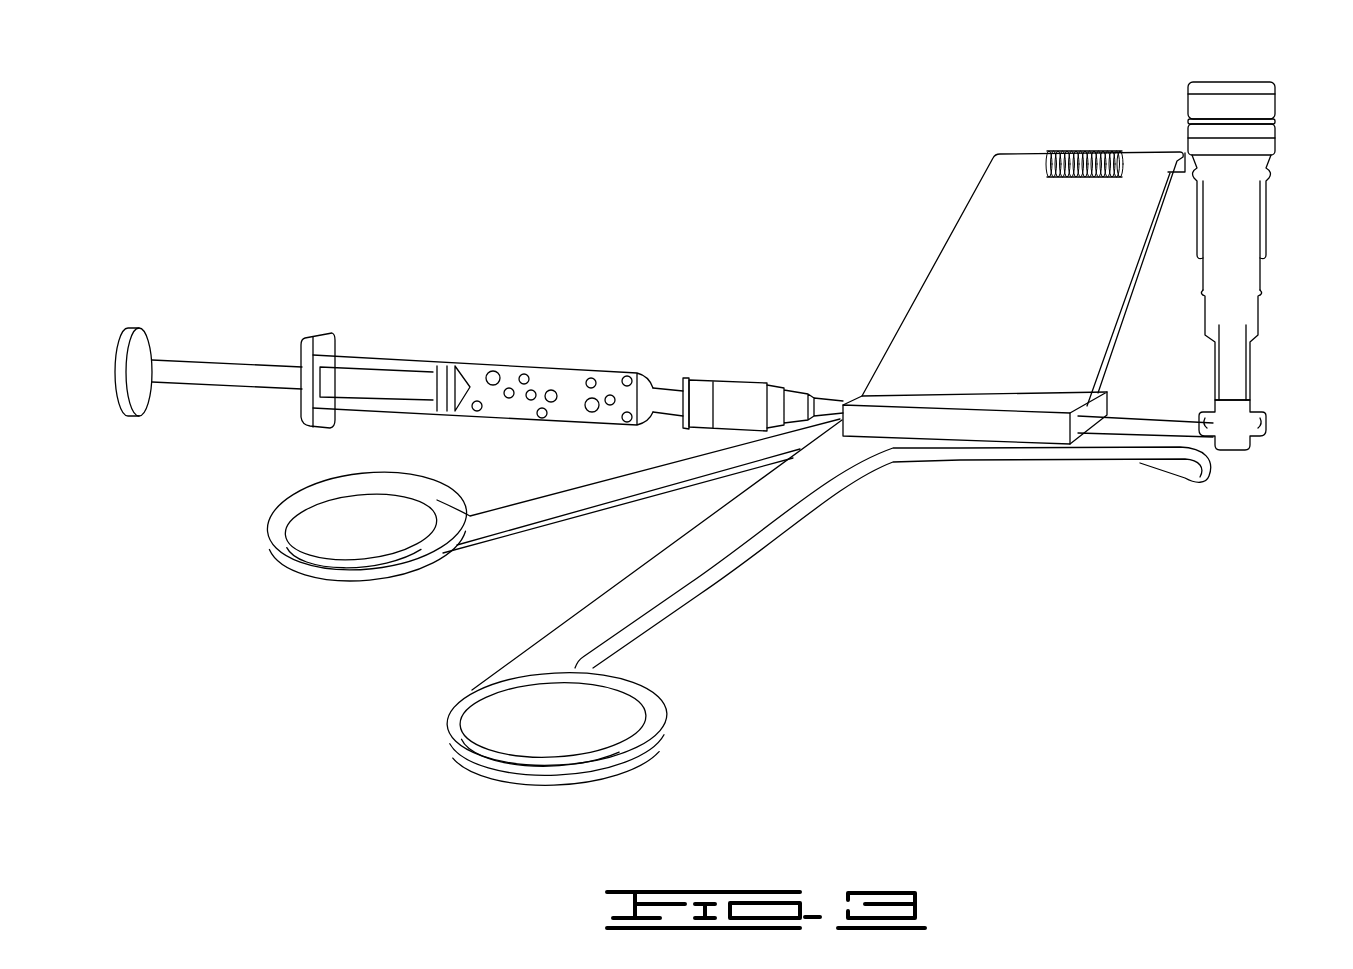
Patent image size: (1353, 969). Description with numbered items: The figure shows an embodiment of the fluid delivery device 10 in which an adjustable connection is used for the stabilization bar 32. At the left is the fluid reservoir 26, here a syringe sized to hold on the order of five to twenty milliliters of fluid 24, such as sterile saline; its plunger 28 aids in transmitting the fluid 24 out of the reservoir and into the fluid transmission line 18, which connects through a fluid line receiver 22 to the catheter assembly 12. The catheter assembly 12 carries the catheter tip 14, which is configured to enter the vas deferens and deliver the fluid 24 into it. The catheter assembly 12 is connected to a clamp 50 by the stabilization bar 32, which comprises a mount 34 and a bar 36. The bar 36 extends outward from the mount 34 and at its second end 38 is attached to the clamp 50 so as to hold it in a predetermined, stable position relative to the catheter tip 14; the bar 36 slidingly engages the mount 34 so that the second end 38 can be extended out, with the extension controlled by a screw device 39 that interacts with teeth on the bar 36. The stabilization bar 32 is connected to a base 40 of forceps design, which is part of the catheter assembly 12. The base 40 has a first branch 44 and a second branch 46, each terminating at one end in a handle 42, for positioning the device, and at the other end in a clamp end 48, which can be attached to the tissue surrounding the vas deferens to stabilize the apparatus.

The fluid delivery device 10 is at (798, 114).
The catheter assembly 12 is at (1016, 489).
The catheter tip 14 is at (1167, 408).
The fluid transmission line 18 is at (832, 400).
The fluid line receiver 22 is at (741, 386).
The fluid 24 is at (543, 380).
The fluid reservoir 26 is at (385, 358).
The plunger 28 is at (186, 360).
The stabilization bar 32 is at (1020, 150).
The mount 34 is at (962, 205).
The bar 36 is at (1182, 152).
The second end 38 is at (1180, 178).
The screw device 39 is at (1077, 148).
The base 40 is at (838, 490).
The handles 42 is at (270, 530).
The first branch 44 is at (678, 592).
The second branch 46 is at (497, 545).
The clamp end 48 is at (1215, 452).
The clamp 50 is at (1262, 83).